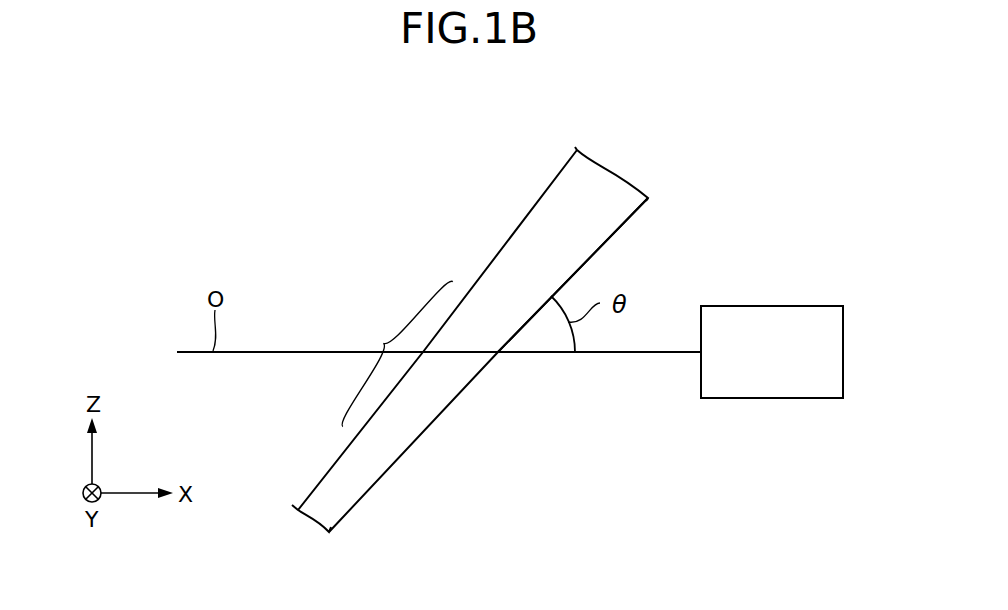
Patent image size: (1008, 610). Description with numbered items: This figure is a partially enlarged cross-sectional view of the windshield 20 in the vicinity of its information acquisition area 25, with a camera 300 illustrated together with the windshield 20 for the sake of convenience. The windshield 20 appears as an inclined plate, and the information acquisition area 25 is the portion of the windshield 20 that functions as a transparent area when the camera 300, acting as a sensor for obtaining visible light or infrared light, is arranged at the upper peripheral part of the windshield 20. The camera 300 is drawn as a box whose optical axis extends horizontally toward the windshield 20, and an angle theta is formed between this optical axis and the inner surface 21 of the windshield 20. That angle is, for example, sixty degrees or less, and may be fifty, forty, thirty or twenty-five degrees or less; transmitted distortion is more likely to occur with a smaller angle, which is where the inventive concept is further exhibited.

The windshield 20 is at (532, 187).
The inner surface 21 is at (607, 238).
The information acquisition area 25 is at (397, 353).
The camera 300 is at (770, 306).